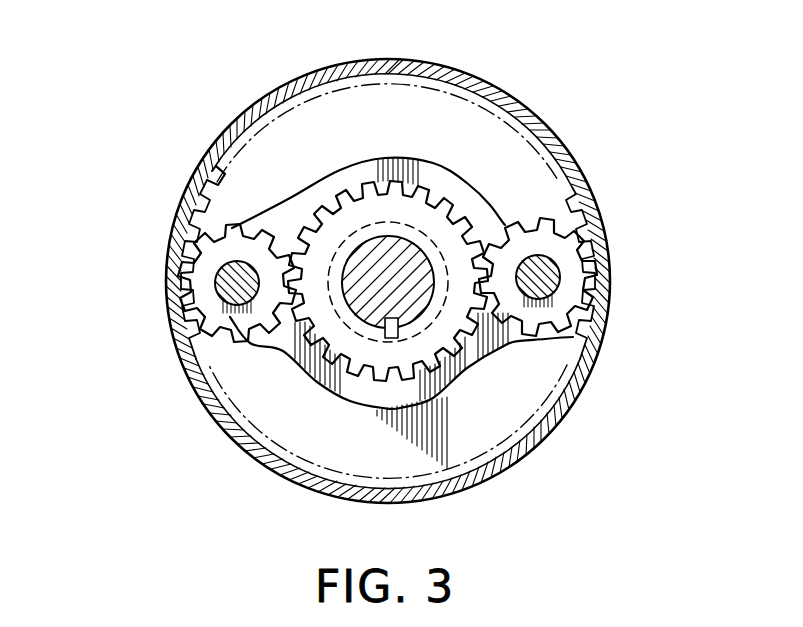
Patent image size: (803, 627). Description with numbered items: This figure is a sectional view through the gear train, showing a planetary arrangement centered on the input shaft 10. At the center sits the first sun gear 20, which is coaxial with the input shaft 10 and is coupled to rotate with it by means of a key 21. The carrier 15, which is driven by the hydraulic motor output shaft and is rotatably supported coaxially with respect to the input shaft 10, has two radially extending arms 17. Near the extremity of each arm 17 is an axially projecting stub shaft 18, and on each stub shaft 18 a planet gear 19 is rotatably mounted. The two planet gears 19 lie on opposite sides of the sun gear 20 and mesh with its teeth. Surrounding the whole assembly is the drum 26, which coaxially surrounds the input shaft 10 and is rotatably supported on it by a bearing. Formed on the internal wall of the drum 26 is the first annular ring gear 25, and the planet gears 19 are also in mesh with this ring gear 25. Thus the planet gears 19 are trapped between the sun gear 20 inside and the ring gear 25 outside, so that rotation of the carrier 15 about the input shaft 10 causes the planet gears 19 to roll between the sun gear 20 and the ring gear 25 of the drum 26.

The input shaft 10 is at (347, 251).
The carrier 15 is at (433, 162).
The radially extending arms 17 is at (519, 343).
The stub shaft 18 is at (216, 279).
The planet gear 19 is at (238, 317).
The first sun gear 20 is at (345, 189).
The key 21 is at (391, 340).
The first annular ring gear 25 is at (199, 178).
The drum 26 is at (214, 130).